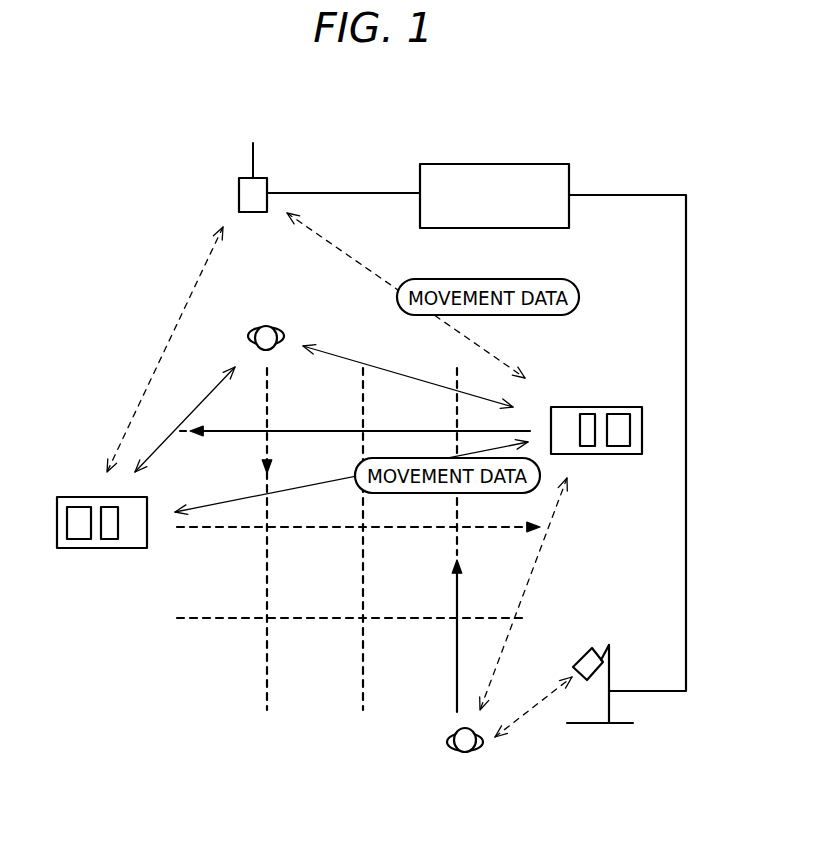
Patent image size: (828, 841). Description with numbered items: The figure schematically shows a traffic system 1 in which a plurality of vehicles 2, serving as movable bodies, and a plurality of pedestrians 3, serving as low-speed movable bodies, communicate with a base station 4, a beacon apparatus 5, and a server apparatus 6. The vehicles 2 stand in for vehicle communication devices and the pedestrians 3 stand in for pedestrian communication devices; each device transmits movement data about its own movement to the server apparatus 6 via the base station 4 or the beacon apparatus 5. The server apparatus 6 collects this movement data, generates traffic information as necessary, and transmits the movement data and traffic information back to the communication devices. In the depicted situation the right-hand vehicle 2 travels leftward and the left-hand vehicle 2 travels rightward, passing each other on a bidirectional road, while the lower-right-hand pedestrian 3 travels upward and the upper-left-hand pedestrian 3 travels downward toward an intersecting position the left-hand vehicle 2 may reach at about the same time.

The traffic system 1 is at (185, 140).
The vehicle 2 is at (90, 550).
The pedestrian 3 is at (277, 327).
The base station 4 is at (267, 186).
The beacon apparatus 5 is at (590, 652).
The server apparatus 6 is at (495, 172).